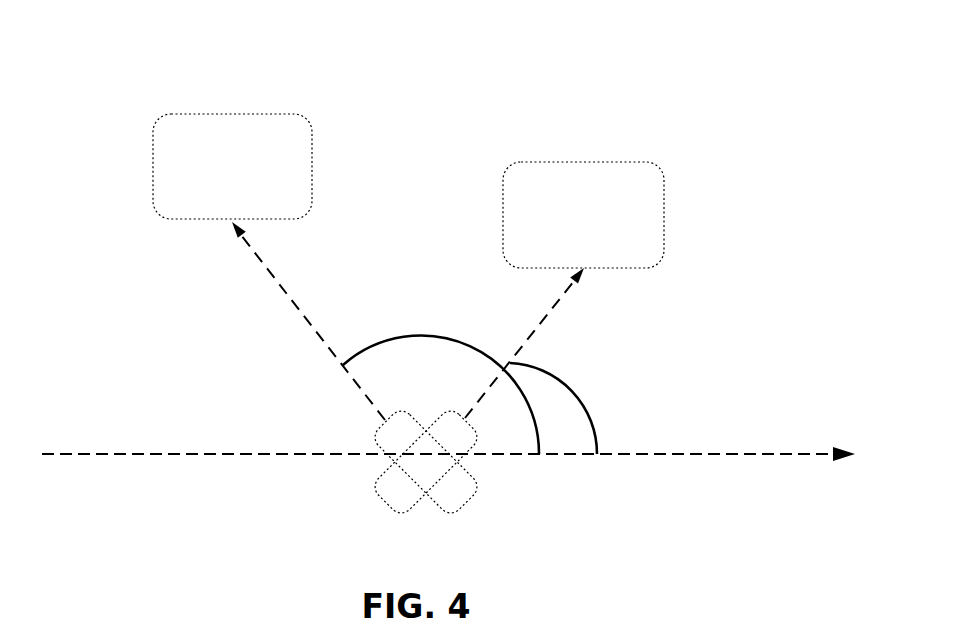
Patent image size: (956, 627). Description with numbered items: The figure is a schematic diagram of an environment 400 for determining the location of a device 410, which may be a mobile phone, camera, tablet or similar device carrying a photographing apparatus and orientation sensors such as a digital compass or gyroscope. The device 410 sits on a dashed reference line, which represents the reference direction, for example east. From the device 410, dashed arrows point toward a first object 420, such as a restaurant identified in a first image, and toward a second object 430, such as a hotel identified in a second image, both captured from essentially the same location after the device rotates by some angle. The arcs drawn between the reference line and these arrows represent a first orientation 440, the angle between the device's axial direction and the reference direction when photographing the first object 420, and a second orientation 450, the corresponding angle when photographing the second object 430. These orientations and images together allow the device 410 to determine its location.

The environment 400 is at (249, 59).
The device 410 is at (470, 504).
The first object 420 is at (564, 227).
The second object 430 is at (212, 179).
The first orientation 440 is at (570, 383).
The second orientation 450 is at (400, 365).